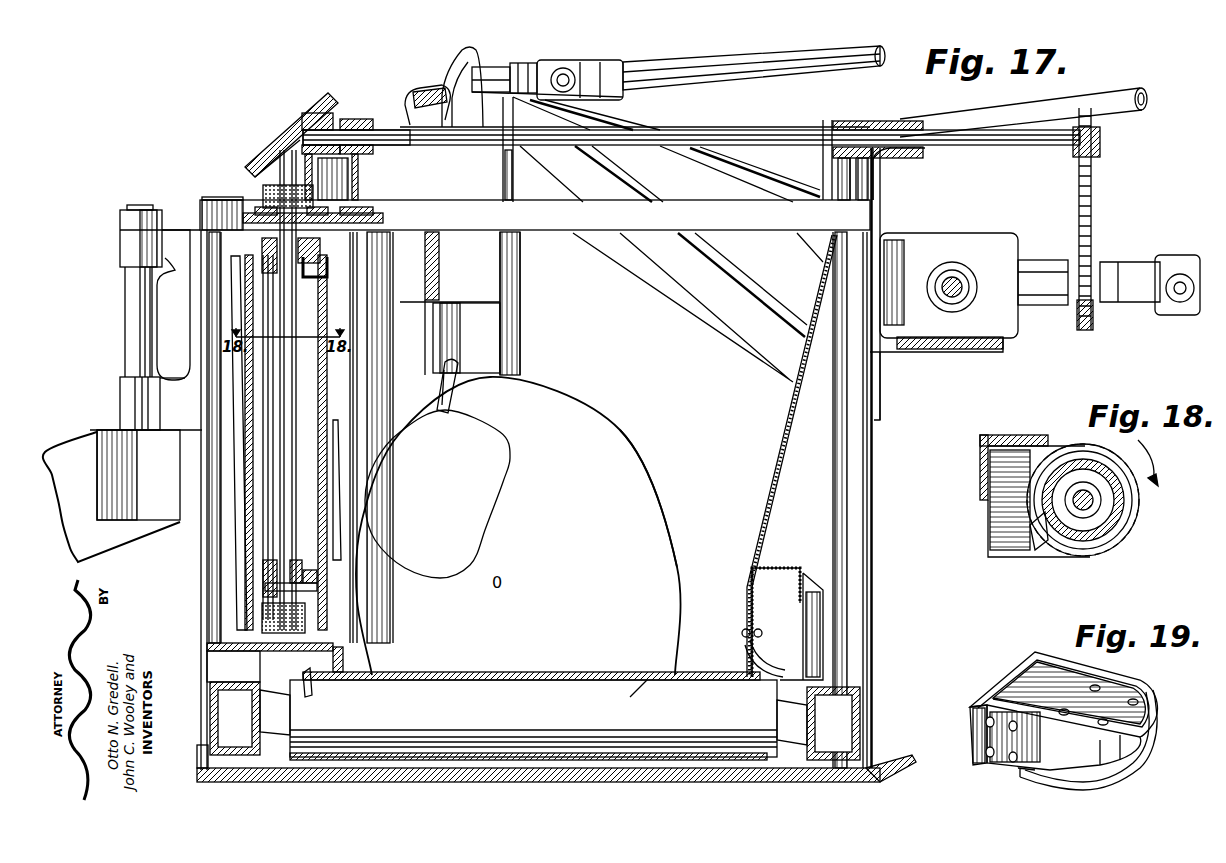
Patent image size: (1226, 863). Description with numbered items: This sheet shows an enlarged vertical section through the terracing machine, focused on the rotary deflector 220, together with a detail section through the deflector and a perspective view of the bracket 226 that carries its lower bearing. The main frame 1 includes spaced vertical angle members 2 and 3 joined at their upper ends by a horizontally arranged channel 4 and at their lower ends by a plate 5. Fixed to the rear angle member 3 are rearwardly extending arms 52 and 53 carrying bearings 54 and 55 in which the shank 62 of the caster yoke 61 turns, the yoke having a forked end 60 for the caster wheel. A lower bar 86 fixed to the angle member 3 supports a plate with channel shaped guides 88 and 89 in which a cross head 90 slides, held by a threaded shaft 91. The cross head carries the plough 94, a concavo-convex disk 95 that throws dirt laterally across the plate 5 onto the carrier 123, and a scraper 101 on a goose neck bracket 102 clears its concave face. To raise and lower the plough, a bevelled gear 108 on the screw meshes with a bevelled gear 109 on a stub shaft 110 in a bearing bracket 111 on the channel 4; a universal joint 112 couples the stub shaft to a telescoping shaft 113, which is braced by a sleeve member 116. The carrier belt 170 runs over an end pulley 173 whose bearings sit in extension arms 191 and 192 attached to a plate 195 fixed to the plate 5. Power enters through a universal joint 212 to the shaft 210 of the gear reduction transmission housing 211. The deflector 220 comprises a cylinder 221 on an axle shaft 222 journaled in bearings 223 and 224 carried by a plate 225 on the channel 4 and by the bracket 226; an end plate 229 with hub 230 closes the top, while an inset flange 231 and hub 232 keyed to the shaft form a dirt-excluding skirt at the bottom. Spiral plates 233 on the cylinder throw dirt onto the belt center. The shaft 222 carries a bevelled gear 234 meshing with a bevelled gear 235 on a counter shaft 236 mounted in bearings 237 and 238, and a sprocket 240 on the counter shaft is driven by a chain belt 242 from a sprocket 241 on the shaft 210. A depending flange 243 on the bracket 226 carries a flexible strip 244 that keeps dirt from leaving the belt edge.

In FIG. 17, the main frame 1 is at (878, 212).
In FIG. 17, the vertical angle member 2 is at (862, 487).
In FIG. 17, the vertical angle member 3 is at (215, 250).
In FIG. 17, the horizontally arranged channel 4 is at (712, 200).
In FIG. 17, the plate 5 is at (495, 783).
In FIG. 17, the laterally projecting arm 52 is at (173, 305).
In FIG. 17, the laterally projecting arm 53 is at (180, 372).
In FIG. 17, the bearing 54 is at (120, 241).
In FIG. 17, the bearing 55 is at (120, 384).
In FIG. 17, the forked end 60 is at (97, 440).
In FIG. 17, the caster yoke 61 is at (110, 432).
In FIG. 17, the shank 62 is at (125, 292).
In FIG. 17, the lower bar 86 is at (317, 590).
In FIG. 17, the channel shaped guide 88 is at (520, 300).
In FIG. 17, the channel shaped guide 89 is at (362, 301).
In FIG. 17, the cross head 90 is at (487, 345).
In FIG. 17, the threaded shaft 91 is at (440, 268).
In FIG. 17, the drum 94 is at (621, 436).
In FIG. 17, the concavo-convex disk 95 is at (637, 490).
In FIG. 17, the scraper 101 is at (485, 528).
In FIG. 17, the goose neck bracket 102 is at (458, 400).
In FIG. 17, the bevelled gear 108 is at (422, 92).
In FIG. 17, the bevelled gear 109 is at (443, 67).
In FIG. 17, the stub shaft 110 is at (518, 68).
In FIG. 17, the bearing bracket 111 is at (509, 65).
In FIG. 17, the universal joint 112 is at (574, 63).
In FIG. 17, the telescoping shaft 113 is at (661, 62).
In FIG. 17, the sleeve member 116 is at (830, 128).
In FIG. 17, the carrier 123 is at (746, 668).
In FIG. 17, the carrier belt 170 is at (602, 676).
In FIG. 17, the end pulley 173 is at (655, 676).
In FIG. 17, the extension arm 191 is at (855, 688).
In FIG. 17, the extension arm 192 is at (234, 688).
In FIG. 17, the plate 195 is at (205, 760).
In FIG. 17, the shaft 210 is at (1072, 268).
In FIG. 17, the housing 211 is at (982, 224).
In FIG. 17, the universal joint 212 is at (1160, 258).
In FIG. 17, the rotary deflector 220 is at (245, 493).
In FIG. 18, the rotary deflector 220 is at (1040, 527).
In FIG. 17, the cylinder 221 is at (327, 400).
In FIG. 18, the cylinder 221 is at (1043, 540).
In FIG. 17, the axle shaft 222 is at (290, 432).
In FIG. 18, the axle shaft 222 is at (1112, 553).
In FIG. 17, the bearing 223 is at (268, 192).
In FIG. 17, the bearing 224 is at (305, 620).
In FIG. 17, the plate 225 is at (248, 215).
In FIG. 17, the bracket 226 is at (343, 652).
In FIG. 18, the bracket 226 is at (986, 520).
In FIG. 19, the bracket 226 is at (1030, 660).
In FIG. 17, the end plate 229 is at (322, 254).
In FIG. 17, the hub 230 is at (330, 272).
In FIG. 17, the inset flange 231 is at (317, 580).
In FIG. 17, the hub 232 is at (302, 565).
In FIG. 18, the hub 232 is at (1112, 500).
In FIG. 17, the spiral plate 233 is at (338, 487).
In FIG. 18, the spiral plate 233 is at (1085, 447).
In FIG. 17, the bevelled gear 234 is at (280, 131).
In FIG. 17, the bevelled gear 235 is at (350, 92).
In FIG. 17, the counter shaft 236 is at (395, 128).
In FIG. 17, the bearing 237 is at (365, 117).
In FIG. 17, the bearing 238 is at (903, 108).
In FIG. 17, the sprocket 240 is at (1099, 136).
In FIG. 17, the sprocket 241 is at (1085, 318).
In FIG. 17, the chain belt 242 is at (1092, 197).
In FIG. 17, the depending flange 243 is at (320, 685).
In FIG. 19, the depending flange 243 is at (970, 752).
In FIG. 17, the flexible strip 244 is at (335, 672).
In FIG. 19, the flexible strip 244 is at (1140, 762).